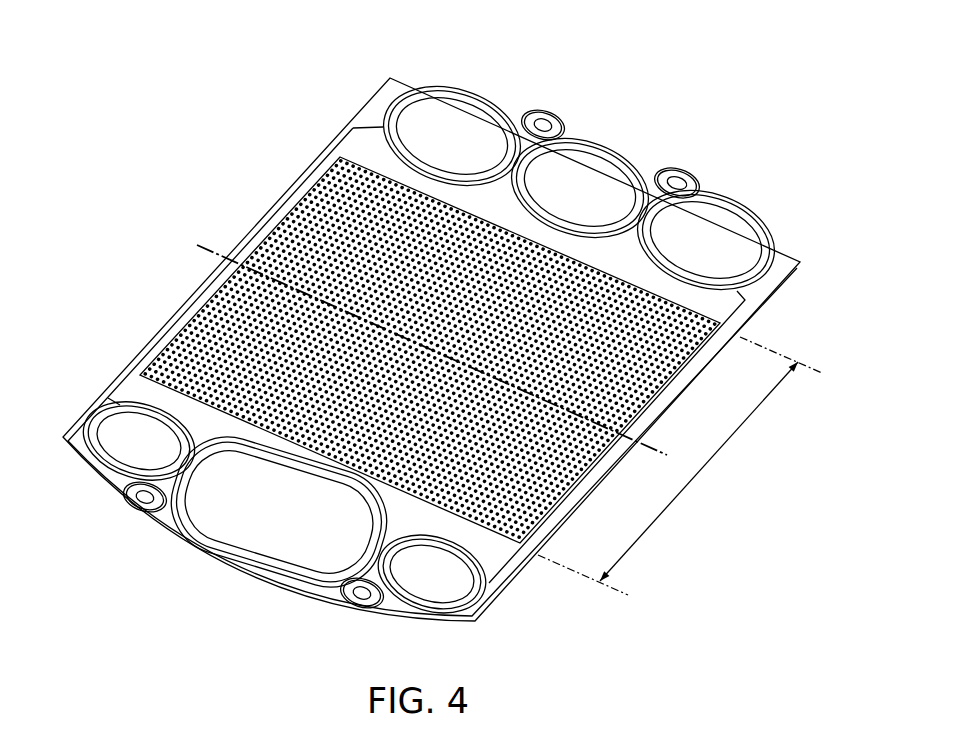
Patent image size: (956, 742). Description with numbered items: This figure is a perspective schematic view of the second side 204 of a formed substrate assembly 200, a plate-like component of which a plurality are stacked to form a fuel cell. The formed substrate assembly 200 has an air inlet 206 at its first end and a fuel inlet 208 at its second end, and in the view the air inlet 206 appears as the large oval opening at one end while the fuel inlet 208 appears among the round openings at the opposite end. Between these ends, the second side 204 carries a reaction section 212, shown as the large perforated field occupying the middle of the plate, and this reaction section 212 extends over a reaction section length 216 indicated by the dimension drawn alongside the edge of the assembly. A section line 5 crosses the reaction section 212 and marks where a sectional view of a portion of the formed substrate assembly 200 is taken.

The formed substrate assembly 200 is at (263, 57).
The second side 204 is at (376, 97).
The air inlet 206 is at (255, 541).
The fuel inlet 208 is at (590, 172).
The reaction section 212 is at (266, 190).
The reaction section length 216 is at (713, 460).
The line 5- 5 is at (197, 245).